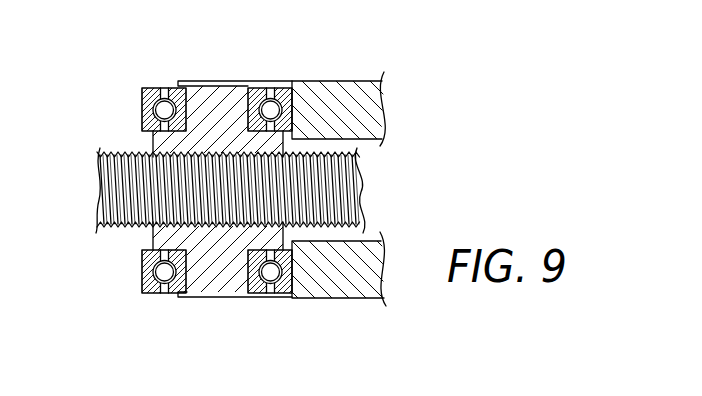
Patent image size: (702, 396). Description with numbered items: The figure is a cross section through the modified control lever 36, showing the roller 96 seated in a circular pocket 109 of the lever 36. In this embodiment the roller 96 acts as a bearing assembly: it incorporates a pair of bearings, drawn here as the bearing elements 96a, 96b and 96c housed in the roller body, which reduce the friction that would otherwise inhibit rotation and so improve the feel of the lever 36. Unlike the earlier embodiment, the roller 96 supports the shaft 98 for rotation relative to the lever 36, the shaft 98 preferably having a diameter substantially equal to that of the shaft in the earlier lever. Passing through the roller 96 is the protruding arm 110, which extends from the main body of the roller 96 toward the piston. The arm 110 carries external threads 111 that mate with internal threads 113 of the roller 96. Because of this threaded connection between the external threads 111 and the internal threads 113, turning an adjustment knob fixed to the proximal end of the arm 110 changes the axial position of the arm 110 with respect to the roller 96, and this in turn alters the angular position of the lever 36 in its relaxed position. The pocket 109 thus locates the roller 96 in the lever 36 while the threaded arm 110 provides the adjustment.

The lever 36 is at (288, 177).
The roller 96 is at (190, 177).
The bearing 96a is at (163, 88).
The bearing flange 96b is at (183, 299).
The bearing 96c is at (142, 270).
The shaft 98 is at (190, 81).
The circular pocket 109 is at (306, 80).
The arm portion 110 is at (362, 190).
The external threads 111 is at (131, 151).
The internal threads 113 is at (165, 233).